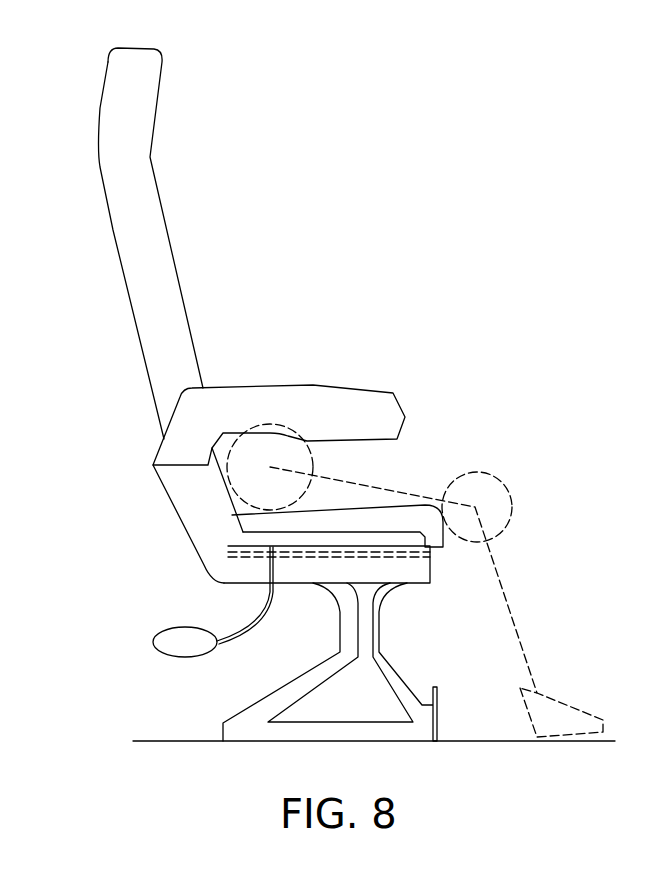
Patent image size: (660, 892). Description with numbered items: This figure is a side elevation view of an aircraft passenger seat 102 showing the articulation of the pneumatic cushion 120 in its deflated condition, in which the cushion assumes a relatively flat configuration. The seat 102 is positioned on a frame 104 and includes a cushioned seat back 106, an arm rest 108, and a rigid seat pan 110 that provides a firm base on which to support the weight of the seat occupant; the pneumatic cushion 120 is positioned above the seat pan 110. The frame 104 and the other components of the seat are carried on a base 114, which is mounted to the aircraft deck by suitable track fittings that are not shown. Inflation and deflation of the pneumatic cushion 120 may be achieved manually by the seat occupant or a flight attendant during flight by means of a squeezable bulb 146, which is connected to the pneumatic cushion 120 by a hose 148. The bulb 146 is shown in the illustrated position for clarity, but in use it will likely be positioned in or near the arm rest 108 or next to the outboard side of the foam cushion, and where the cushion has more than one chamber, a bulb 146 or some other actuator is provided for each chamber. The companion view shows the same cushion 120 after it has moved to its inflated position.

The aircraft passenger seat 102 is at (192, 110).
The frame 104 is at (198, 515).
The cushioned seat back 106 is at (147, 185).
The arm rest 108 is at (250, 393).
The rigid seat pan 110 is at (407, 557).
The base 114 is at (243, 730).
The pneumatic cushion 120 is at (378, 547).
The squeezable bulb 146 is at (187, 650).
The hose 148 is at (238, 632).